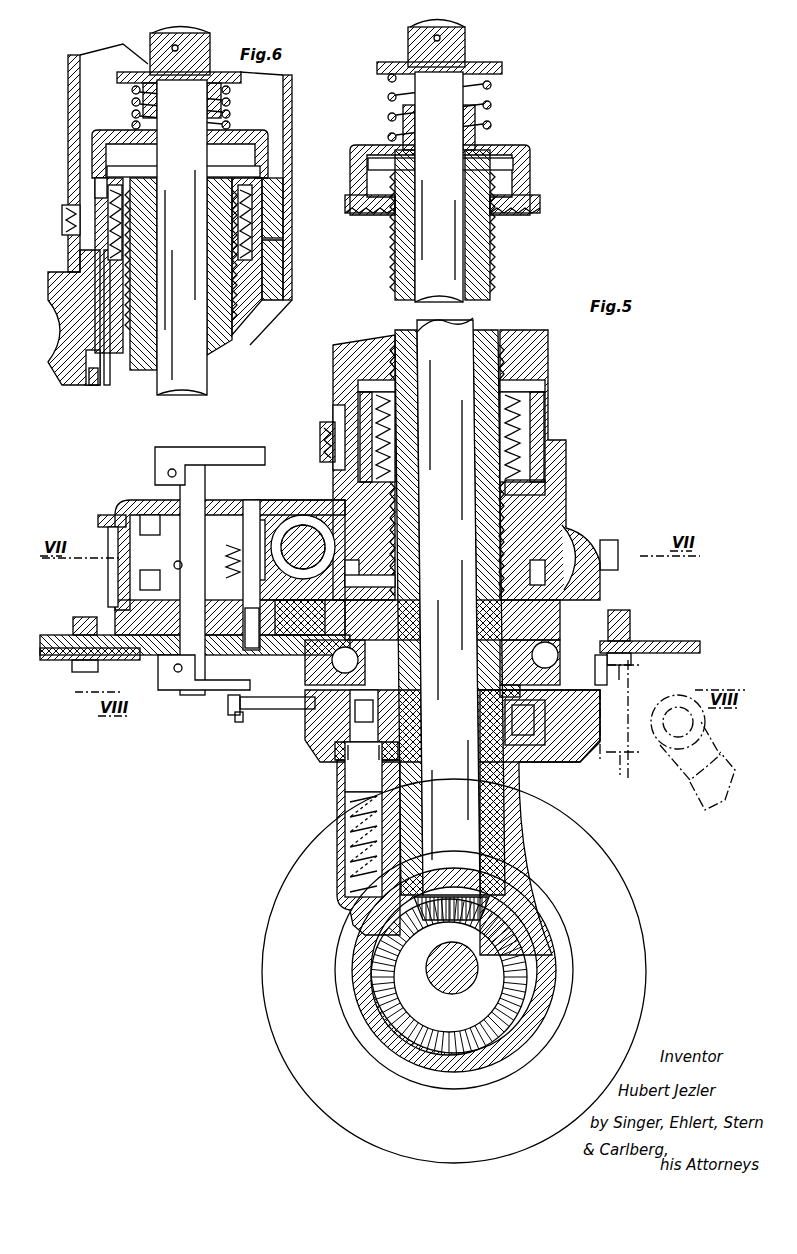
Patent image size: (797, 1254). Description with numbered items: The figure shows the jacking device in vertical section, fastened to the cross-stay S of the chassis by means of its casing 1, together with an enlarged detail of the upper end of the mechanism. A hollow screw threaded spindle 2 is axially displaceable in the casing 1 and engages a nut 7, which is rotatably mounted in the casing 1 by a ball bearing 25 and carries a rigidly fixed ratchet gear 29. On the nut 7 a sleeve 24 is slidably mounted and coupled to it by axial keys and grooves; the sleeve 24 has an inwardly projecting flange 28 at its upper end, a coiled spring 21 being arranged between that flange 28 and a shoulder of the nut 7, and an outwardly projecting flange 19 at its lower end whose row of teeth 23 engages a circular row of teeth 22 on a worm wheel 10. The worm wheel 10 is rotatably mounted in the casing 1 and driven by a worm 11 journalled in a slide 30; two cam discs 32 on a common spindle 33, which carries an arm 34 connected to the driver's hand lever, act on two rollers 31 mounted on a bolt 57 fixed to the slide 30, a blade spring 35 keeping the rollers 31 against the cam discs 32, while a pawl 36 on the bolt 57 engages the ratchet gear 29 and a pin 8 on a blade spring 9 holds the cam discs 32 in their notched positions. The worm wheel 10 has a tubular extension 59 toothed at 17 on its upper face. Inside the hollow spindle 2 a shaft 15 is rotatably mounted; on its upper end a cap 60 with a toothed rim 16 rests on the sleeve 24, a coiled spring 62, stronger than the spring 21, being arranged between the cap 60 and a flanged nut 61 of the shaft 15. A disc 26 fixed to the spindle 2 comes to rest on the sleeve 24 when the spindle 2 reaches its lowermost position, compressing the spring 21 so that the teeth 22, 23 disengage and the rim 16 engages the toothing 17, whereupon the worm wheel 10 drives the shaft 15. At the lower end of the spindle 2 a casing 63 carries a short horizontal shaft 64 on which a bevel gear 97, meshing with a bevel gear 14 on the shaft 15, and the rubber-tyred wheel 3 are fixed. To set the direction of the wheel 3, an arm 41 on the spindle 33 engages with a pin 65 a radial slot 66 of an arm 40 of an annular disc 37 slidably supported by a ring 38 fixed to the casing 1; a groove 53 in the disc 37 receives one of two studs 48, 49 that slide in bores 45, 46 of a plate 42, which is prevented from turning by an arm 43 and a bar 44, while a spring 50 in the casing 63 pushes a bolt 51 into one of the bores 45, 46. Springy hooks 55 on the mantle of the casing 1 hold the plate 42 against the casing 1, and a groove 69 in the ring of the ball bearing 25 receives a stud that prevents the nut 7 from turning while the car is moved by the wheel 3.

In FIG. 6, the casing 1 is at (292, 300).
In FIG. 5, the casing 1 is at (590, 570).
In FIG. 6, the hollow screw threaded spindle 2 is at (222, 345).
In FIG. 5, the hollow screw threaded spindle 2 is at (400, 283).
In FIG. 5, the wheel 3 is at (632, 965).
In FIG. 6, the nut 7 is at (255, 270).
In FIG. 5, the nut 7 is at (512, 488).
In FIG. 5, the pin 8 is at (98, 521).
In FIG. 5, the blade spring 9 is at (118, 584).
In FIG. 6, the worm wheel 10 is at (70, 308).
In FIG. 5, the worm wheel 10 is at (580, 536).
In FIG. 5, the worm 11 is at (283, 515).
In FIG. 5, the bevel gear 14 is at (490, 904).
In FIG. 6, the shaft 15 is at (172, 152).
In FIG. 5, the shaft 15 is at (446, 268).
In FIG. 6, the toothed rim 16 is at (275, 192).
In FIG. 5, the toothed rim 16 is at (520, 213).
In FIG. 6, the toothing 17 is at (275, 192).
In FIG. 5, the toothing 17 is at (338, 410).
In FIG. 6, the outwardly projecting flange 19 is at (112, 382).
In FIG. 5, the outwardly projecting flange 19 is at (365, 594).
In FIG. 6, the coiled spring 21 is at (250, 230).
In FIG. 5, the coiled spring 21 is at (552, 426).
In FIG. 6, the circular row of teeth 22 is at (86, 358).
In FIG. 5, the circular row of teeth 22 is at (335, 540).
In FIG. 6, the row of teeth 23 is at (95, 380).
In FIG. 5, the row of teeth 23 is at (445, 572).
In FIG. 6, the sleeve 24 is at (100, 192).
In FIG. 5, the sleeve 24 is at (545, 395).
In FIG. 5, the ball bearing 25 is at (558, 678).
In FIG. 6, the disc 26 is at (248, 168).
In FIG. 5, the disc 26 is at (505, 163).
In FIG. 6, the flange 28 is at (262, 178).
In FIG. 5, the flange 28 is at (522, 380).
In FIG. 5, the ratchet gear 29 is at (630, 614).
In FIG. 5, the slide 30 is at (236, 498).
In FIG. 5, the rollers 31 is at (172, 565).
In FIG. 5, the cam discs 32 is at (130, 557).
In FIG. 5, the spindle 33 is at (180, 495).
In FIG. 5, the arm 34 is at (222, 455).
In FIG. 5, the blade spring 35 is at (228, 562).
In FIG. 5, the pawl 36 is at (285, 650).
In FIG. 5, the annular disc 37 is at (565, 745).
In FIG. 5, the ring 38 is at (600, 700).
In FIG. 5, the arm 40 is at (230, 710).
In FIG. 5, the arm 41 is at (200, 692).
In FIG. 5, the plate 42 is at (322, 735).
In FIG. 5, the arm 43 is at (633, 766).
In FIG. 5, the bar 44 is at (690, 784).
In FIG. 5, the bore 45 is at (340, 745).
In FIG. 5, the bore 46 is at (545, 748).
In FIG. 5, the stud 48 is at (525, 745).
In FIG. 5, the stud 49 is at (380, 716).
In FIG. 5, the spring 50 is at (350, 848).
In FIG. 5, the bolt 51 is at (360, 800).
In FIG. 5, the groove 53 is at (336, 742).
In FIG. 5, the springy hooks 55 is at (605, 762).
In FIG. 5, the bolt 57 is at (250, 648).
In FIG. 6, the tubular extension 59 is at (70, 218).
In FIG. 5, the tubular extension 59 is at (330, 430).
In FIG. 6, the cap 60 is at (120, 130).
In FIG. 5, the cap 60 is at (528, 148).
In FIG. 6, the flanged nut 61 is at (130, 82).
In FIG. 5, the flanged nut 61 is at (482, 68).
In FIG. 6, the coiled spring 62 is at (240, 100).
In FIG. 5, the coiled spring 62 is at (492, 102).
In FIG. 5, the casing 63 is at (555, 870).
In FIG. 5, the short horizontal shaft 64 is at (448, 970).
In FIG. 5, the pin 65 is at (240, 722).
In FIG. 5, the radial slot 66 is at (255, 708).
In FIG. 5, the groove 69 is at (505, 696).
In FIG. 5, the bevel gear 97 is at (510, 1000).
In FIG. 5, the cross-stay S is at (680, 644).